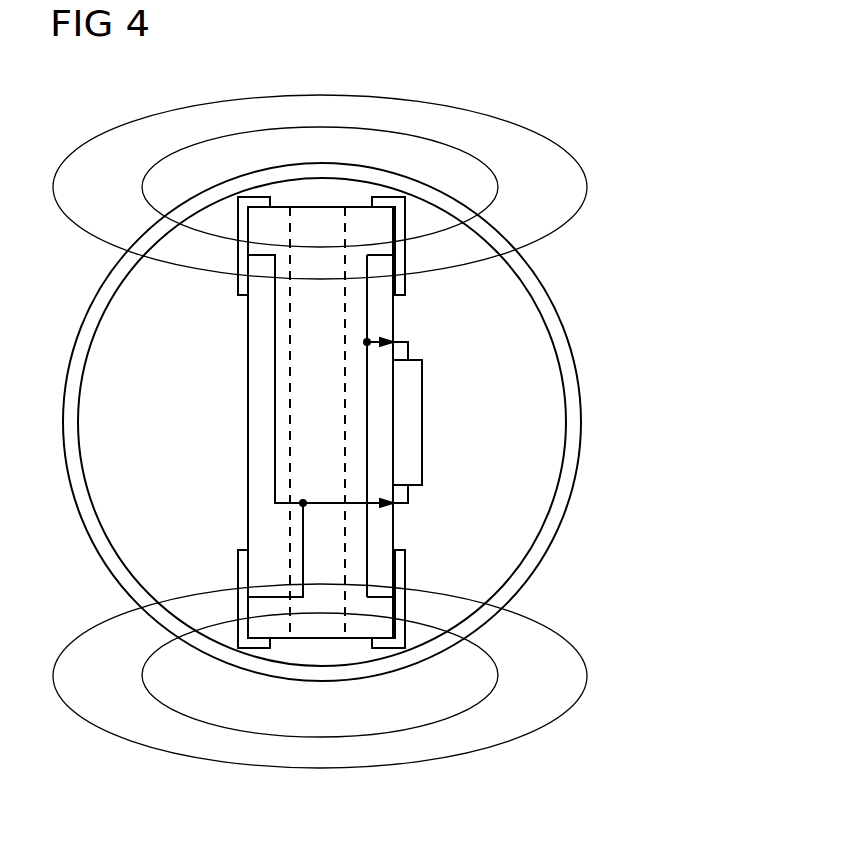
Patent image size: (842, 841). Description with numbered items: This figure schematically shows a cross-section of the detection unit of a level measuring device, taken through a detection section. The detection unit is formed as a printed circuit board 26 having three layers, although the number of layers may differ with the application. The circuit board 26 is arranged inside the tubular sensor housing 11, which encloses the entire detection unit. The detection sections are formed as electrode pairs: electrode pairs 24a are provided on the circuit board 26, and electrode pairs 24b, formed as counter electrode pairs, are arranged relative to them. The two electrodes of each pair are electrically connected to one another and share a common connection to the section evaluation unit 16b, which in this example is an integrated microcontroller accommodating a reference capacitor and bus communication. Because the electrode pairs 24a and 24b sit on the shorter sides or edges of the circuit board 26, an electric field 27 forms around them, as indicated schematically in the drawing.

The sensor housing 11 is at (578, 424).
The electric field 27 is at (509, 124).
The electrode pair 24a is at (405, 287).
The counter electrode pair 24b is at (238, 290).
The printed circuit board 26 is at (306, 364).
The section evaluation unit 16b is at (412, 405).